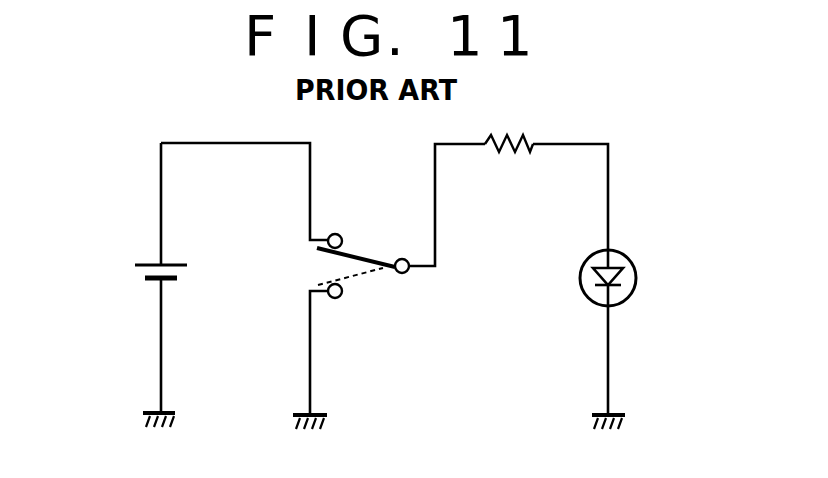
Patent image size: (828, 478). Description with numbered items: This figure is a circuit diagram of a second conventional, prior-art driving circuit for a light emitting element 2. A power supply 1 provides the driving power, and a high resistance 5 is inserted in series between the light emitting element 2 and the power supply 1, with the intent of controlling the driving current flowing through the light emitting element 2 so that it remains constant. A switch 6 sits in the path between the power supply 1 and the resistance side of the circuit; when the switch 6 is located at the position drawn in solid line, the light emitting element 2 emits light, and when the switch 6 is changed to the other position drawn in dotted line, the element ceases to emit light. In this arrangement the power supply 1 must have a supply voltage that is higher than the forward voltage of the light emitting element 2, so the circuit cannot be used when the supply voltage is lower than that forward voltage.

The power supply 1 is at (135, 272).
The light emitting element 2 is at (582, 288).
The high resistance 5 is at (513, 132).
The switch 6 is at (370, 277).